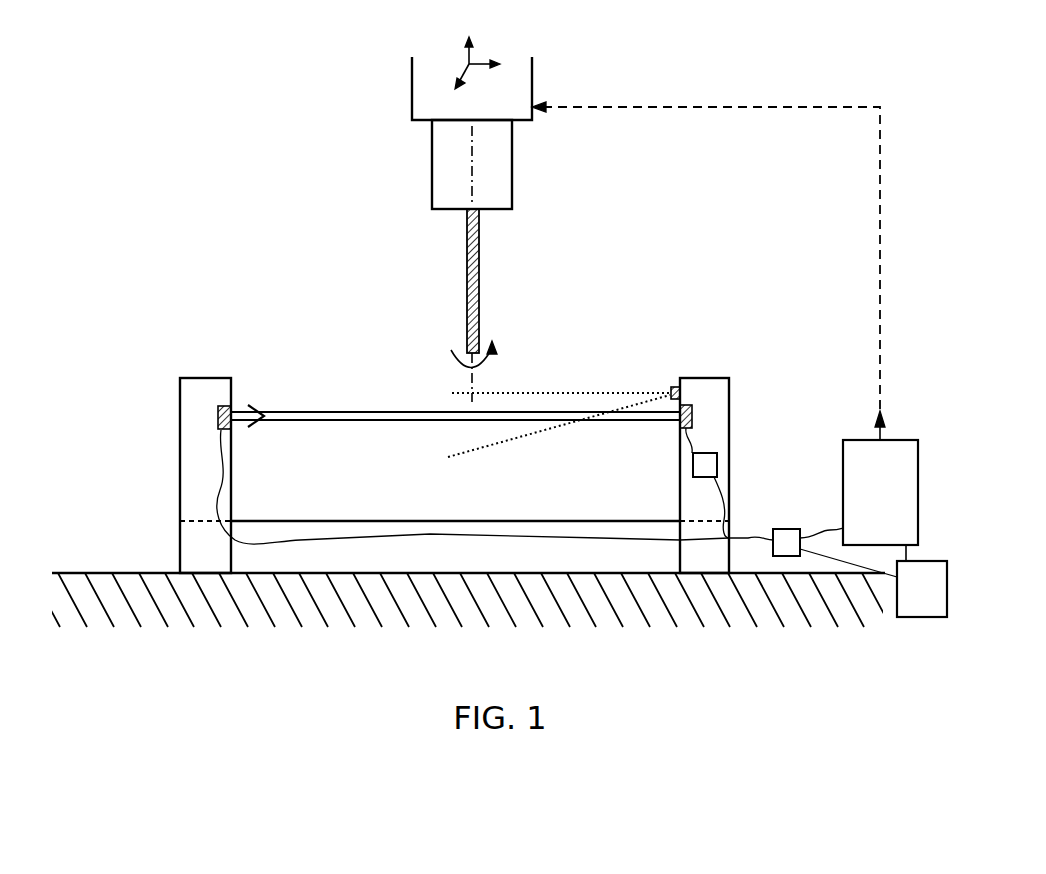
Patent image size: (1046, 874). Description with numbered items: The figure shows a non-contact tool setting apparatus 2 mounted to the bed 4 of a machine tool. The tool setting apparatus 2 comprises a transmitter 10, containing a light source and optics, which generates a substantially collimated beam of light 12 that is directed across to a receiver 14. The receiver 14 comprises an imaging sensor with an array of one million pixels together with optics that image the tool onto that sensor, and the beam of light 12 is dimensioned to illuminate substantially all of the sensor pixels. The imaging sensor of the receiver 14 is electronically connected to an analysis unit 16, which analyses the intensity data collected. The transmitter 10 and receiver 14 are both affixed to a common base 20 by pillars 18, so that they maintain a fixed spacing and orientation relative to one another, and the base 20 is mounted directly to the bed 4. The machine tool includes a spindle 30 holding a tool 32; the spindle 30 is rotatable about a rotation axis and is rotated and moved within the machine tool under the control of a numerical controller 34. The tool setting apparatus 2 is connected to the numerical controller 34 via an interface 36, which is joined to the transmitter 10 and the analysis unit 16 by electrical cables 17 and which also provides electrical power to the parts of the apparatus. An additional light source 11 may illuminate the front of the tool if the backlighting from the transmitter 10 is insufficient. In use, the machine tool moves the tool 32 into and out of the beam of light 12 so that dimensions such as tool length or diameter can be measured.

The tool setting apparatus 2 is at (753, 361).
The bed 4 is at (488, 617).
The transmitter 10 is at (226, 403).
The additional light source 11 is at (671, 388).
The beam of light 12 is at (329, 411).
The receiver 14 is at (686, 404).
The analysis unit 16 is at (717, 466).
The electrical cables 17 is at (750, 537).
The pillars 18 is at (186, 489).
The base 20 is at (456, 567).
The spindle 30 is at (512, 186).
The tool 32 is at (479, 288).
The numerical controller 34 is at (865, 507).
The interface 36 is at (793, 528).